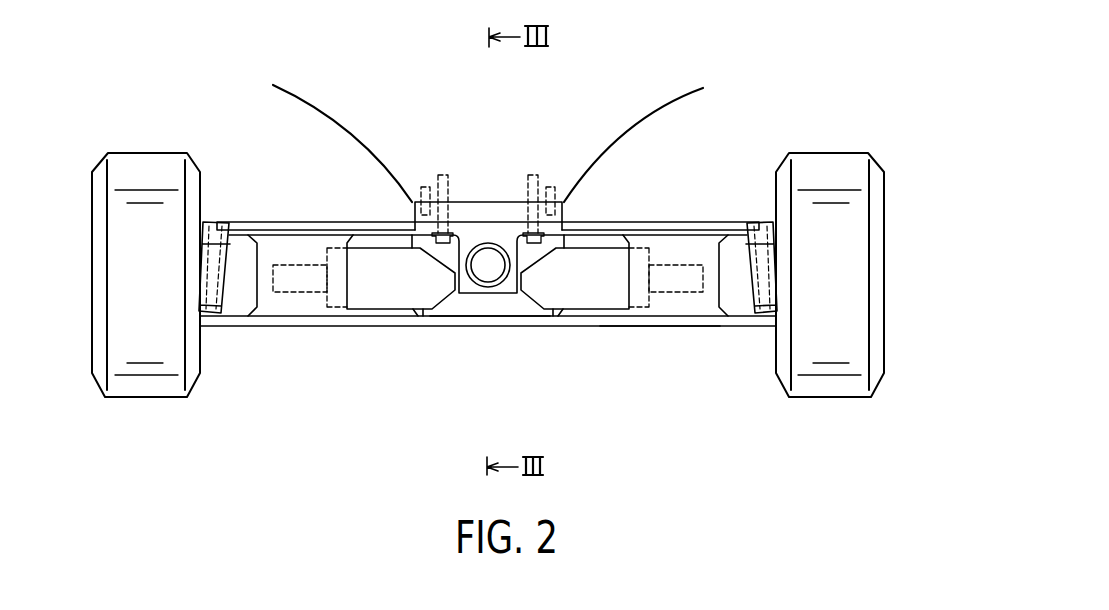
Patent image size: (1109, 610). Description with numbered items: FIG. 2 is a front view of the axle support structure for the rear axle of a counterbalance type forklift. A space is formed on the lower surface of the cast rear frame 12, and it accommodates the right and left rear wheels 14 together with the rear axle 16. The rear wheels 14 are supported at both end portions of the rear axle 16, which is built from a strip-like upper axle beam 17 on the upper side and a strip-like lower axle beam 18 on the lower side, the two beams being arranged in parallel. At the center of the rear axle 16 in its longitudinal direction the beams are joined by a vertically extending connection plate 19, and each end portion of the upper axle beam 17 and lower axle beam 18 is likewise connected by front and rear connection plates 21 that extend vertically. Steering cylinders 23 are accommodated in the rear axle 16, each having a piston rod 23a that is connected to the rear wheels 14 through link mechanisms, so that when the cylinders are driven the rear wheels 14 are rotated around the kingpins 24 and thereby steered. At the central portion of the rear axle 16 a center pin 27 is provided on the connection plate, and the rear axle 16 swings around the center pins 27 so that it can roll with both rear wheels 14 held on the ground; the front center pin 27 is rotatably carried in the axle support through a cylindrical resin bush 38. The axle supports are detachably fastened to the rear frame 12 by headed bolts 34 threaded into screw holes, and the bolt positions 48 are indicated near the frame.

The rear frame 12 is at (638, 98).
The rear wheel 14 is at (146, 165).
The rear axle 16 is at (647, 327).
The upper axle beam 17 is at (273, 230).
The lower axle beam 18 is at (268, 324).
The front side connection plate 19 is at (471, 320).
The connection plate 21 is at (307, 247).
The steering cylinder 23 is at (380, 286).
The piston rod 23a is at (298, 283).
The kingpin 24 is at (213, 272).
The center pin 27 is at (485, 262).
The headed bolt 34 is at (443, 247).
The bush 38 is at (478, 278).
The bolt 48 is at (425, 187).